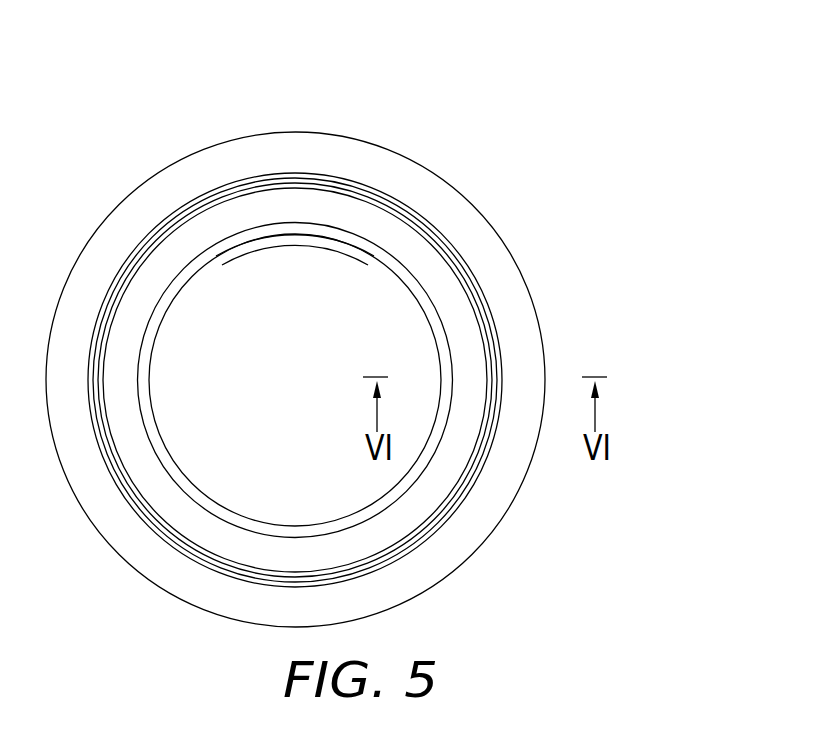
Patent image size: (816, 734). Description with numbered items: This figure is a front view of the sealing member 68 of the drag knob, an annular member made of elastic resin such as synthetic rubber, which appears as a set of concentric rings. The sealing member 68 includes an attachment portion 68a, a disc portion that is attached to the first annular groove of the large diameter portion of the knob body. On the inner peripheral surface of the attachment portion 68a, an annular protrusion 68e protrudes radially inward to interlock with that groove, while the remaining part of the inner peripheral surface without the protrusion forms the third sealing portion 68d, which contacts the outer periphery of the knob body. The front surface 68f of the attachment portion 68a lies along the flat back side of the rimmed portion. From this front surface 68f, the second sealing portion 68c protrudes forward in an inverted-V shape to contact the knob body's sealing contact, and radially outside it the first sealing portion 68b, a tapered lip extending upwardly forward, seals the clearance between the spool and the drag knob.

The sealing member 68 is at (467, 158).
The attachment portion 68a is at (212, 243).
The first sealing portion 68b is at (477, 227).
The second sealing portion 68c is at (420, 227).
The third sealing portion 68d is at (318, 222).
The annular protrusion 68e is at (348, 240).
The front surface 68f is at (457, 305).